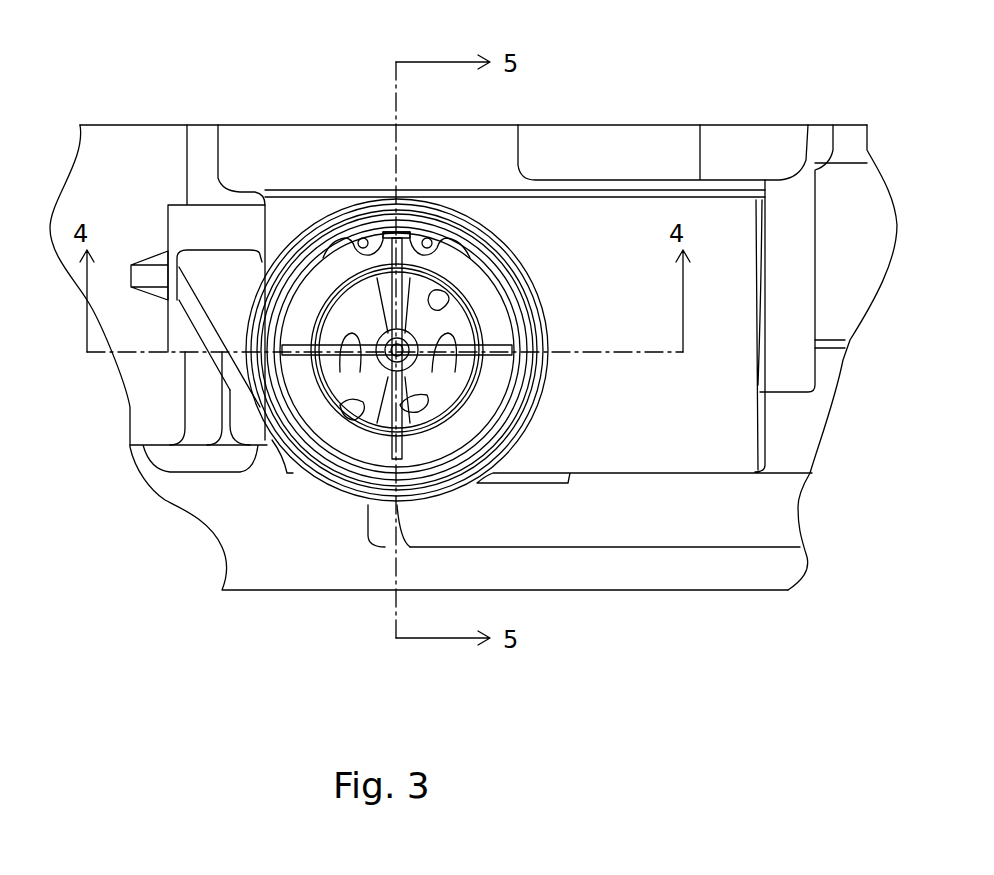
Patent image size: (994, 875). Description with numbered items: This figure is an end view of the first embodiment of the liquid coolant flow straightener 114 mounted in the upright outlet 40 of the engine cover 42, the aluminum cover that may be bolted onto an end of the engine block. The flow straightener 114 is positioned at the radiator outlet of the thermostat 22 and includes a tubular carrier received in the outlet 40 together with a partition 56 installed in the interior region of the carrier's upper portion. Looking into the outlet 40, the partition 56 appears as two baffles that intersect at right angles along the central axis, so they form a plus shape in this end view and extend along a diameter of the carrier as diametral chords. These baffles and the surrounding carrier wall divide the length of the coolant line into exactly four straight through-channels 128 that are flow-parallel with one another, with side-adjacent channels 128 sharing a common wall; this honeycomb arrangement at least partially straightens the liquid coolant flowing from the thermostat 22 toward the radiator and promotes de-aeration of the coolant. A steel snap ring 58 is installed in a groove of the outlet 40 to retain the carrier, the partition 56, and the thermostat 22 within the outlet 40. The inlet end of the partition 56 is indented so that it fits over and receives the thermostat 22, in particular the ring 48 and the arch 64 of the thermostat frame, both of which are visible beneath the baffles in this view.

The thermostat 22 is at (441, 313).
The outlet 40 is at (525, 432).
The engine cover 42 is at (735, 428).
The ring 48 is at (405, 305).
The partition 56 is at (525, 360).
The snap ring 58 is at (324, 268).
The arch 64 is at (350, 307).
The liquid coolant flow straightener 114 is at (365, 400).
The through-channels 128 is at (420, 398).